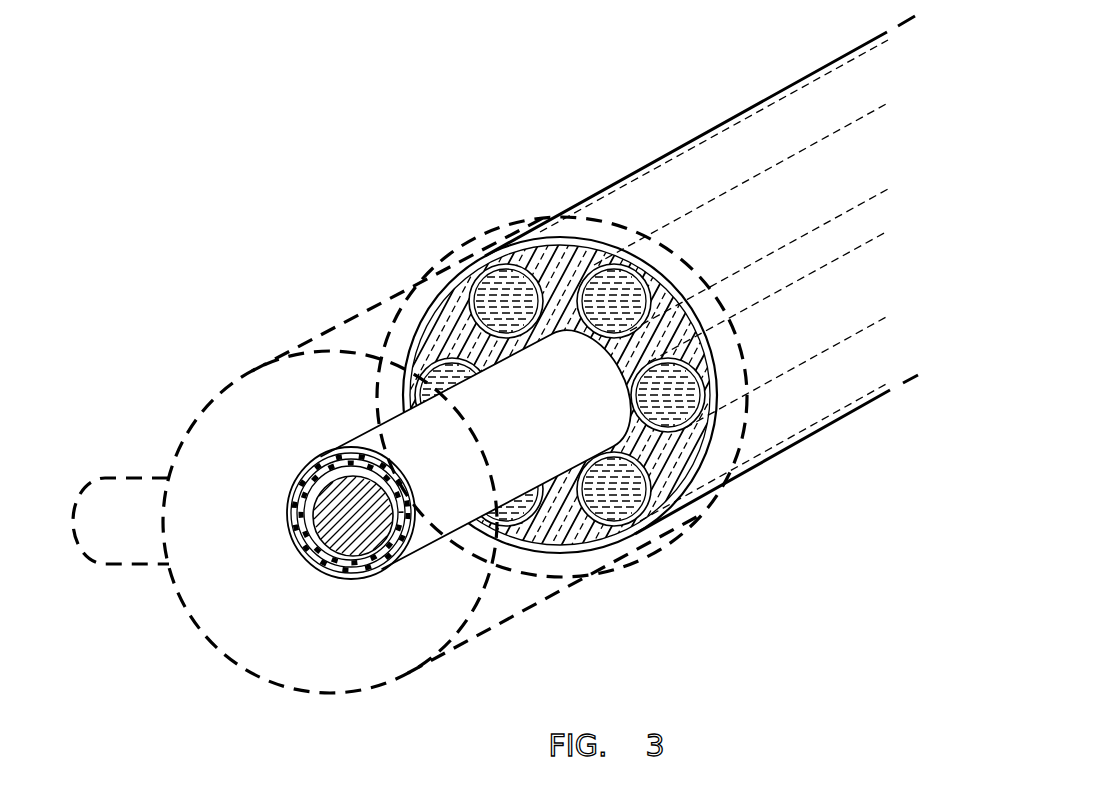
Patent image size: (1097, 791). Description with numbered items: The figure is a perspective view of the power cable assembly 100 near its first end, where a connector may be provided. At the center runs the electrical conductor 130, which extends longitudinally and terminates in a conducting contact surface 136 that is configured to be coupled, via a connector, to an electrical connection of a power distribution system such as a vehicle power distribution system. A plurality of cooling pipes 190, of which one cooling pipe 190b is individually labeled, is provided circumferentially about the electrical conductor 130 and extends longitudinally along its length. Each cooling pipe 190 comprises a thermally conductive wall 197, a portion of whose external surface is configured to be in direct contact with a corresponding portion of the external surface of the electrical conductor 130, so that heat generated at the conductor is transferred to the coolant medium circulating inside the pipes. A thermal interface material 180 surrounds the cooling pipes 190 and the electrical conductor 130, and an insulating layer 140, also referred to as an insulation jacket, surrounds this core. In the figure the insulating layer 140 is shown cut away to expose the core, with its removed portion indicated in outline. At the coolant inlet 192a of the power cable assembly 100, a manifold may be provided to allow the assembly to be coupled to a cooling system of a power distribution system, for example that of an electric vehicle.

The power cable assembly 100 is at (503, 377).
The electrical conductor 130 is at (413, 553).
The contact surface 136 is at (313, 570).
The insulating layer 140 is at (813, 430).
The thermal interface material 180 is at (690, 503).
The cooling pipes 190 is at (488, 270).
The cooling pipe 190b is at (652, 264).
The coolant inlet 192a is at (100, 478).
The thermally conductive wall 197 is at (228, 386).